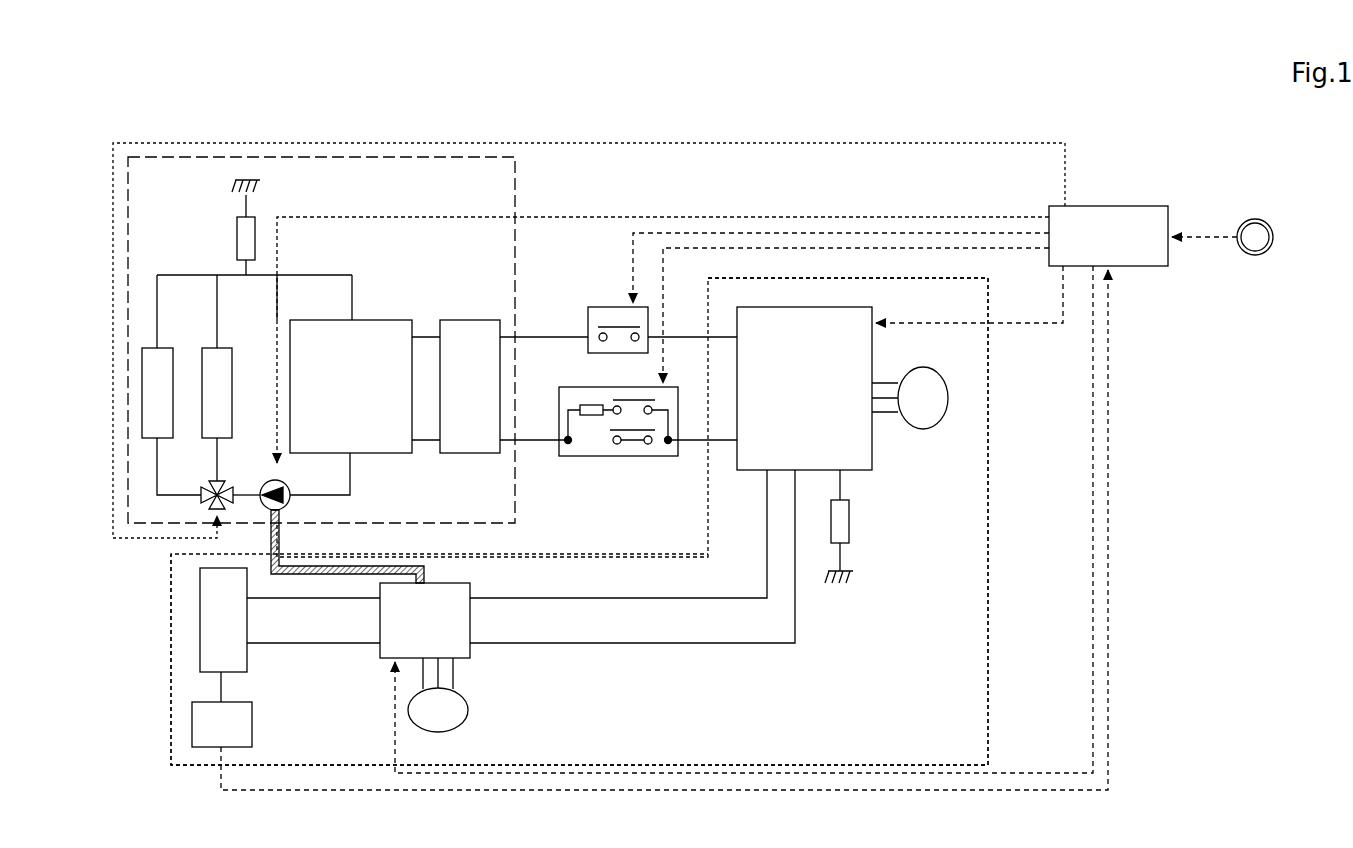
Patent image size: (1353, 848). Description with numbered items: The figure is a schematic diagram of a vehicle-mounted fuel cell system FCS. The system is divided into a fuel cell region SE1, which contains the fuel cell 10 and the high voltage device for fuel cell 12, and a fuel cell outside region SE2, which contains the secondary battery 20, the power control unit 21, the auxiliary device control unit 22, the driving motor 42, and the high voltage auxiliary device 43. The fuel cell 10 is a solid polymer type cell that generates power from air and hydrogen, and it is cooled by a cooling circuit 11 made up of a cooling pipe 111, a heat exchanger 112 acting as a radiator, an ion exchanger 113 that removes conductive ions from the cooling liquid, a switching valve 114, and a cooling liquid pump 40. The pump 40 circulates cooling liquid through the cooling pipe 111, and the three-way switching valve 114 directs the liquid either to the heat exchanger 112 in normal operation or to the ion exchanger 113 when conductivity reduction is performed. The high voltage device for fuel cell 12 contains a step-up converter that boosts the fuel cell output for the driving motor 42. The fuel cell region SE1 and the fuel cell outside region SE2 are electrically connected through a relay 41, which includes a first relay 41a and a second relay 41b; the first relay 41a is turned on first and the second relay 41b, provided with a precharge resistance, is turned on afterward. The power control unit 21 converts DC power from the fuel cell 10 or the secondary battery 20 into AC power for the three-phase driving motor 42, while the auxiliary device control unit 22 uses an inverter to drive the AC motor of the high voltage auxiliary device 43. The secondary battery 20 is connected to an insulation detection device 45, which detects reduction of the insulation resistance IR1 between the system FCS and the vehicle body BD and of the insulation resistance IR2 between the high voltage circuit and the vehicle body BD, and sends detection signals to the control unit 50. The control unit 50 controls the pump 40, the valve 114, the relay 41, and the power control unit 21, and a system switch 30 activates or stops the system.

The fuel cell system FCS is at (684, 128).
The fuel cell region SE1 is at (515, 192).
The fuel cell outside region SE2 is at (988, 660).
The fuel cell 10 is at (340, 399).
The cooling circuit 11 is at (376, 310).
The high voltage device for fuel cell 12 is at (459, 399).
The cooling pipe 111 is at (318, 277).
The heat exchanger 112 is at (165, 348).
The ion exchanger 113 is at (222, 348).
The switching valve 114 is at (229, 495).
The insulation resistance IR1 is at (237, 250).
The insulation resistance IR2 is at (849, 520).
The vehicle body BD is at (544, 389).
The cooling liquid pump 40 is at (288, 502).
The relay 41 is at (560, 273).
The first relay 41a is at (610, 307).
The second relay 41b is at (620, 387).
The power control unit 21 is at (794, 399).
The driving motor 42 is at (918, 430).
The control unit 50 is at (1098, 247).
The system switch 30 is at (1273, 240).
The secondary battery 20 is at (212, 631).
The auxiliary device control unit 22 is at (414, 631).
The high voltage auxiliary device 43 is at (458, 692).
The insulation detection device 45 is at (240, 702).